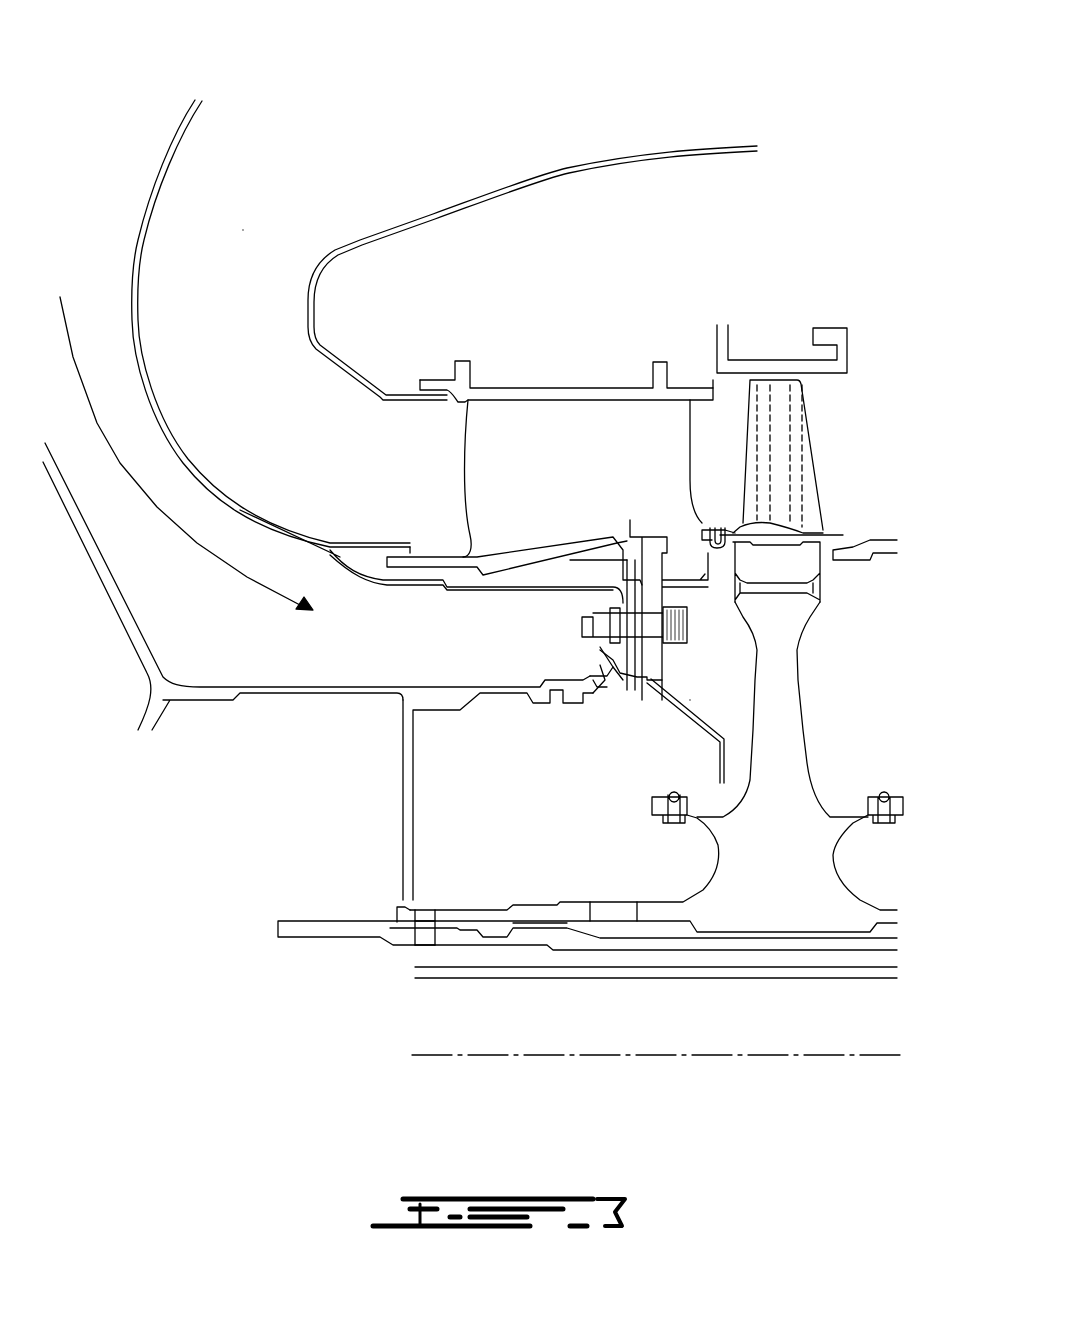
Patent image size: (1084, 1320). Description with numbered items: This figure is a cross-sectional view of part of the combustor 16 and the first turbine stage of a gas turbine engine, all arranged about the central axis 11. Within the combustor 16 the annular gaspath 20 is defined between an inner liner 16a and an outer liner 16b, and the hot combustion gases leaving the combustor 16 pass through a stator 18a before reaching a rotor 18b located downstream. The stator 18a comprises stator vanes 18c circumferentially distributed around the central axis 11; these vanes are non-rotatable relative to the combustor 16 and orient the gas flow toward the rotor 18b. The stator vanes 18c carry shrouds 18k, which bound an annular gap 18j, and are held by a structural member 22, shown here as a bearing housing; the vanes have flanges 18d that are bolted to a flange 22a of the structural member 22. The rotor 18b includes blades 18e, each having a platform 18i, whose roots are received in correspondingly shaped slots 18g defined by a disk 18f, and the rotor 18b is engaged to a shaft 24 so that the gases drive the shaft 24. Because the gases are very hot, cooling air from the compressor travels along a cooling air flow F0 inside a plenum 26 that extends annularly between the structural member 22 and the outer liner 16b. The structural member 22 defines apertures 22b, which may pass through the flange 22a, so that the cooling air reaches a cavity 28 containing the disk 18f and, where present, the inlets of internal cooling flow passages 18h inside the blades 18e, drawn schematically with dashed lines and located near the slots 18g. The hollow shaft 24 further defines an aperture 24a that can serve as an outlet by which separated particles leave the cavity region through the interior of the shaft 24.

The central axis 11 is at (630, 1058).
The combustor 16 is at (428, 158).
The inner liner 16a is at (576, 168).
The outer liner 16b is at (163, 147).
The stator 18a is at (576, 445).
The rotor 18b is at (827, 458).
The stator vanes 18c is at (556, 510).
The flanges 18d is at (600, 565).
The blades 18e is at (813, 508).
The disk 18f is at (780, 687).
The slots 18g is at (800, 570).
The internal cooling flow passages 18h is at (777, 397).
The platform 18i is at (713, 560).
The annular gap 18j is at (718, 527).
The shrouds 18k is at (700, 507).
The annular gaspath 20 is at (252, 222).
The structural member 22 is at (205, 705).
The flange 22a is at (630, 688).
The apertures 22b is at (603, 695).
The shaft 24 is at (325, 932).
The aperture 24a is at (412, 934).
The plenum 26 is at (198, 575).
The cavity 28 is at (698, 756).
The cooling air flow F0 is at (117, 463).